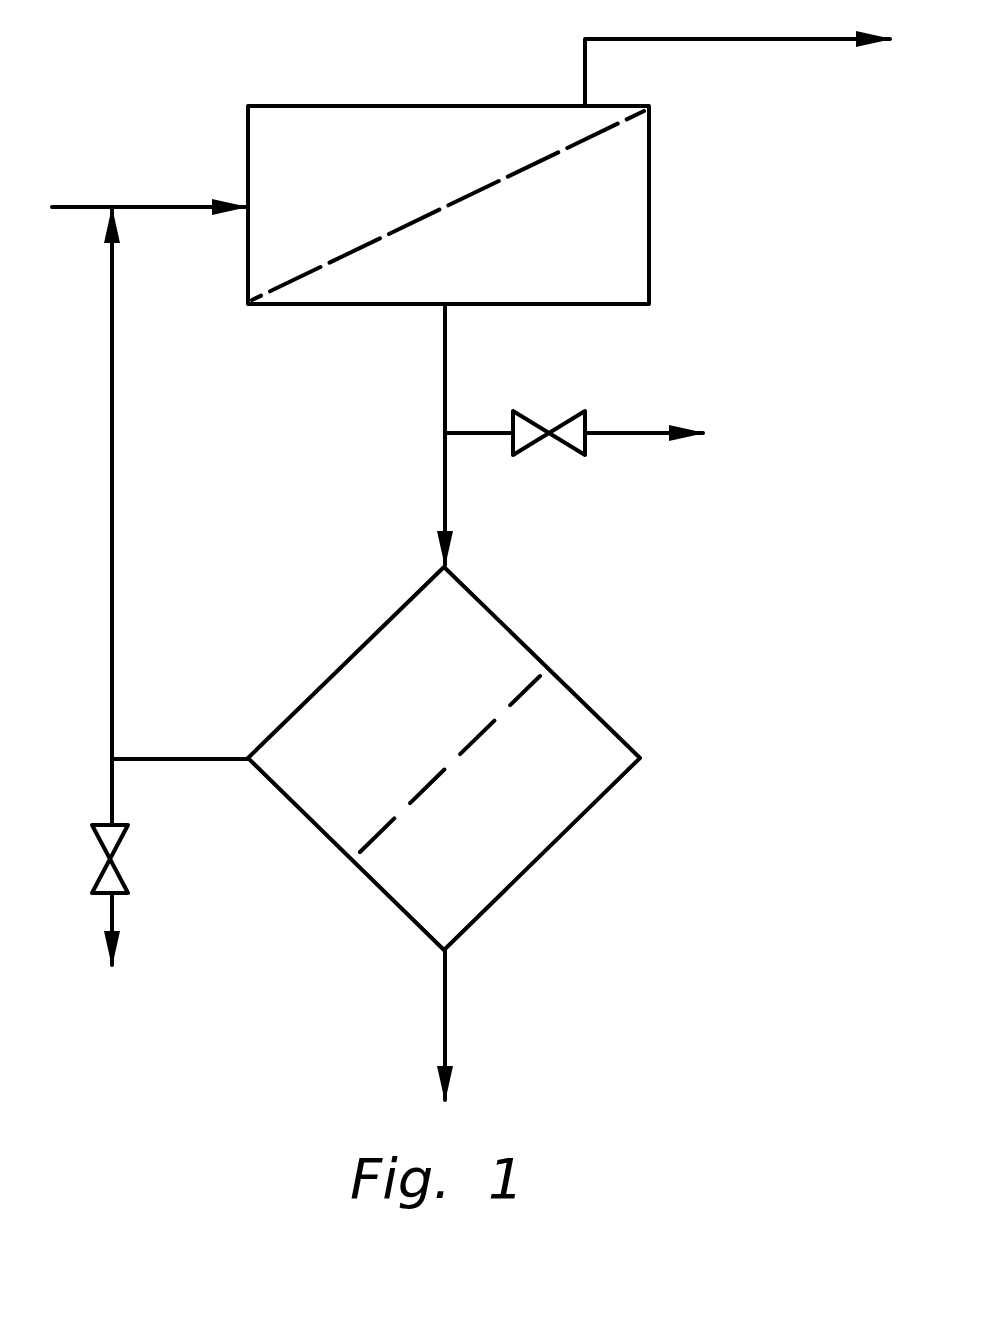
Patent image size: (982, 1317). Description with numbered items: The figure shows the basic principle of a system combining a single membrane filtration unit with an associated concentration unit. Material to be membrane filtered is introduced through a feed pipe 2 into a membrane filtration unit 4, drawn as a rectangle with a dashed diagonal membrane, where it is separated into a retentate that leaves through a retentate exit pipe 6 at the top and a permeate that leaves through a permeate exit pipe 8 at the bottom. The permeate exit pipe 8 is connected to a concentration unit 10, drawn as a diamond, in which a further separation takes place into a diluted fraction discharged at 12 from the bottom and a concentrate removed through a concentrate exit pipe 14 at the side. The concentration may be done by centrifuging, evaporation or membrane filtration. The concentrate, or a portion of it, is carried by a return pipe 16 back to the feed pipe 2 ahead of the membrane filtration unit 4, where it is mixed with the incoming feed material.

The feed pipe 2 is at (149, 185).
The membrane filtration unit 4 is at (649, 206).
The retentate exit pipe 6 is at (737, 53).
The permeate exit pipe 8 is at (574, 434).
The concentration unit 10 is at (631, 739).
The diluted fraction discharge 12 is at (472, 1025).
The concentrate exit pipe 14 is at (180, 739).
The return pipe 16 is at (84, 587).